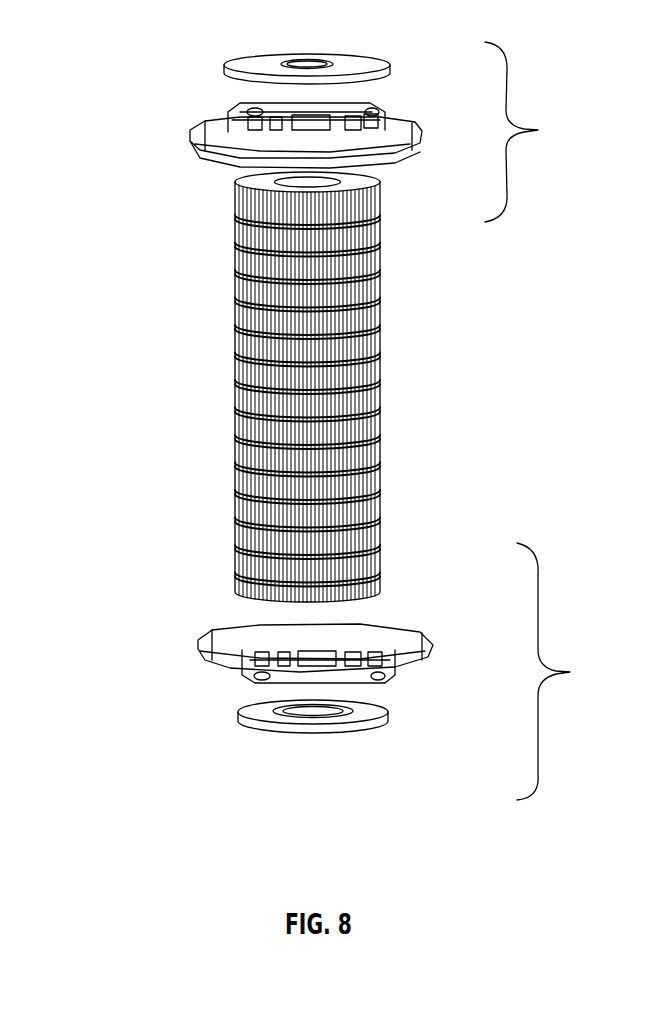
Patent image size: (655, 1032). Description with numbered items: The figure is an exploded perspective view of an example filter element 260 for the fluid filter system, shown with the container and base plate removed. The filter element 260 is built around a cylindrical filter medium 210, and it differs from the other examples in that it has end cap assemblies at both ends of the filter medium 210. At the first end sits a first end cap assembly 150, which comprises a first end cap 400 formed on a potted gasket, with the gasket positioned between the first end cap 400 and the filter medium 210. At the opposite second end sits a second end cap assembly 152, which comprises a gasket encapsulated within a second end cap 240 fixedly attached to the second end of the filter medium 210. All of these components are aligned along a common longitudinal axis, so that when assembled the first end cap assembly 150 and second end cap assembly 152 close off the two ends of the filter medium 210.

The first end cap 400 is at (214, 52).
The filter element 260 is at (105, 135).
The end cap assembly 150 is at (539, 132).
The filter medium 210 is at (230, 397).
The end cap assembly 152 is at (570, 671).
The second end cap 240 is at (362, 748).